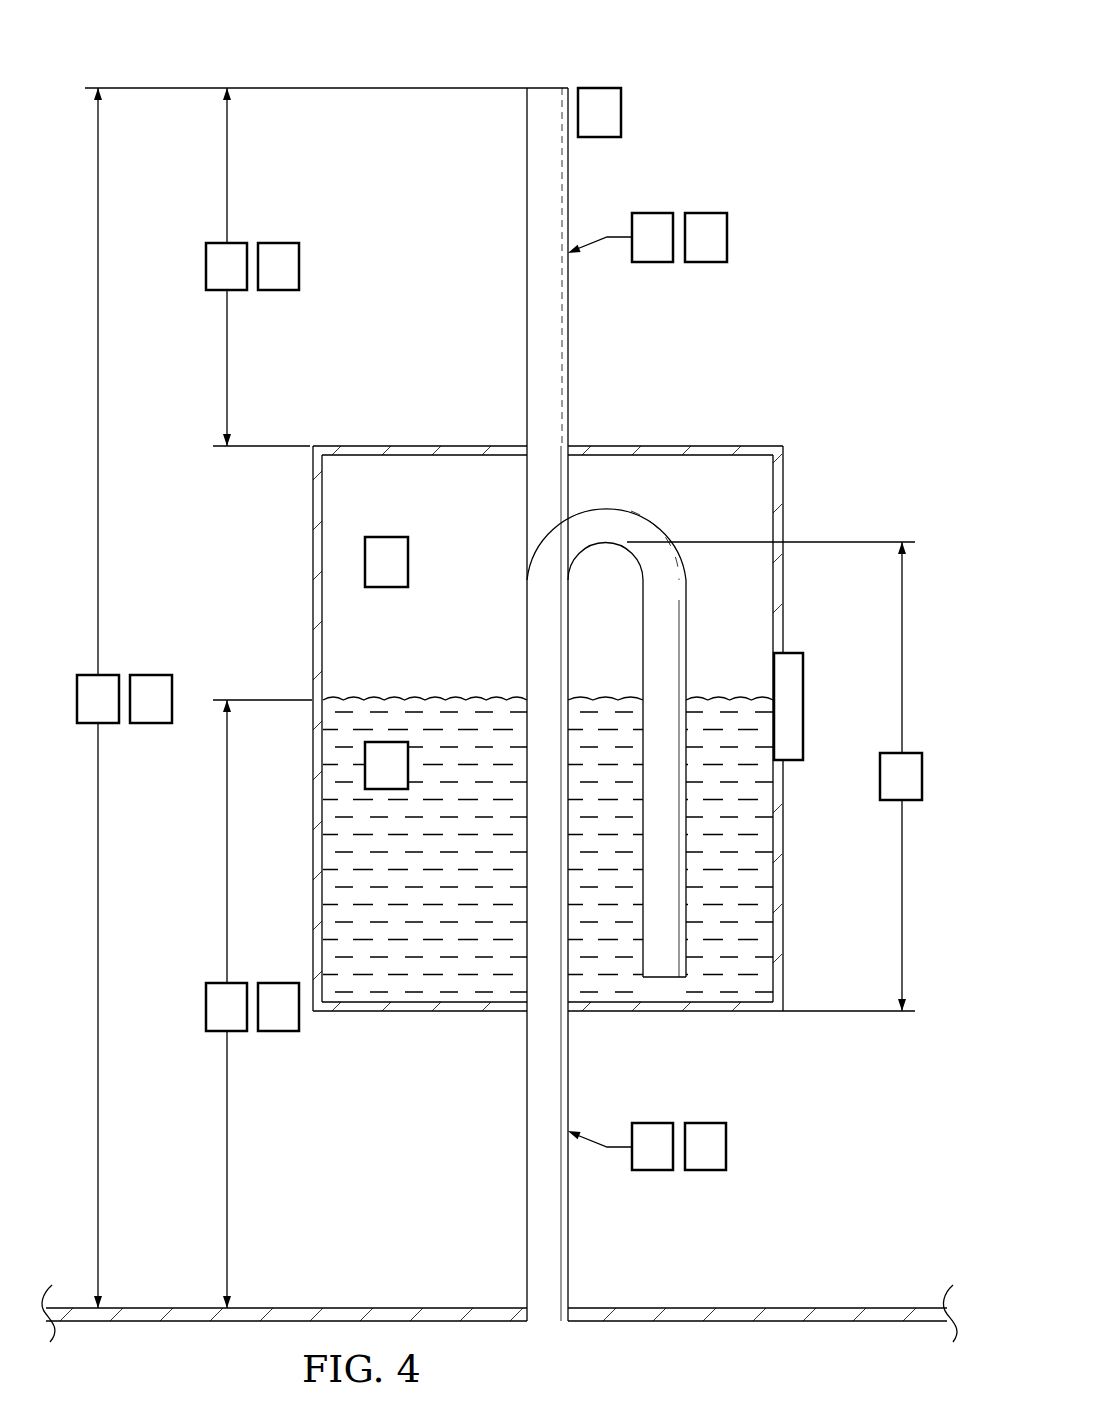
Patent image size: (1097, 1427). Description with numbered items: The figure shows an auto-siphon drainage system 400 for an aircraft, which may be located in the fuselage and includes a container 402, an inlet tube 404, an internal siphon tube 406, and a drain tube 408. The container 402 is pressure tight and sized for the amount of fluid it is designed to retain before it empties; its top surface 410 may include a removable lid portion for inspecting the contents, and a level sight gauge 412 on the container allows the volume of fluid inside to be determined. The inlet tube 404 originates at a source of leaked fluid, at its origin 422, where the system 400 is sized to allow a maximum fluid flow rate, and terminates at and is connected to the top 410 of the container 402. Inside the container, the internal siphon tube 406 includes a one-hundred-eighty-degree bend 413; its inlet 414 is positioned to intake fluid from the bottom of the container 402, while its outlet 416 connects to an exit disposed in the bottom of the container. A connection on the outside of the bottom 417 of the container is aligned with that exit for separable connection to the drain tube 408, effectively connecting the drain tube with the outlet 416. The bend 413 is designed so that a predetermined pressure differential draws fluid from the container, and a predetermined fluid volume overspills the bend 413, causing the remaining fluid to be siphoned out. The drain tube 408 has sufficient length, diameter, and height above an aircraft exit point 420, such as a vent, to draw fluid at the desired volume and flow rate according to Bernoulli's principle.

The auto-siphon drainage system 400 is at (499, 701).
The container 402 is at (313, 608).
The inlet tube 404 is at (527, 182).
The internal siphon tube 406 is at (604, 724).
The drain tube 408 is at (527, 1184).
The top surface 410 is at (678, 446).
The level sight gauge 412 is at (805, 705).
The 180° bend 413 is at (558, 517).
The inlet 414 is at (665, 977).
The outlet 416 is at (527, 1008).
The bottom 417 is at (358, 1012).
The aircraft exit point 420 is at (527, 1322).
The origin 422 is at (546, 88).